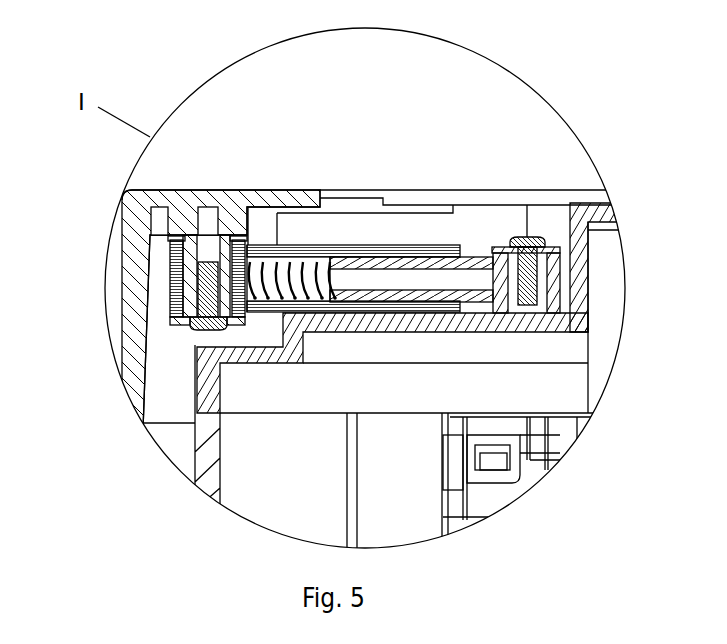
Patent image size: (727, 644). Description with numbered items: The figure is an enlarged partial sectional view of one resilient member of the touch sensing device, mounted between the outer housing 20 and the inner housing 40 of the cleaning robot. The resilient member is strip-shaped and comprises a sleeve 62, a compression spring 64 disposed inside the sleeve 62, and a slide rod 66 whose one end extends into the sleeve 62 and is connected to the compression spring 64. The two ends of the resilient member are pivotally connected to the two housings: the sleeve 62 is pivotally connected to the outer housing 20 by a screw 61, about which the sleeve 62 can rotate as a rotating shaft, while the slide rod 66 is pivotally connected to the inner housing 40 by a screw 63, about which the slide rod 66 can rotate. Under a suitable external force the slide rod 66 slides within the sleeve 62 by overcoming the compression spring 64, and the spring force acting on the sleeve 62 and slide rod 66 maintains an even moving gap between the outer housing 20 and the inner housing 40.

The outer housing 20 is at (125, 272).
The screw 61 is at (192, 326).
The inner housing 40 is at (195, 388).
The sleeve 62 is at (285, 247).
The compression spring 64 is at (320, 258).
The slide rod 66 is at (478, 256).
The screw 63 is at (544, 242).